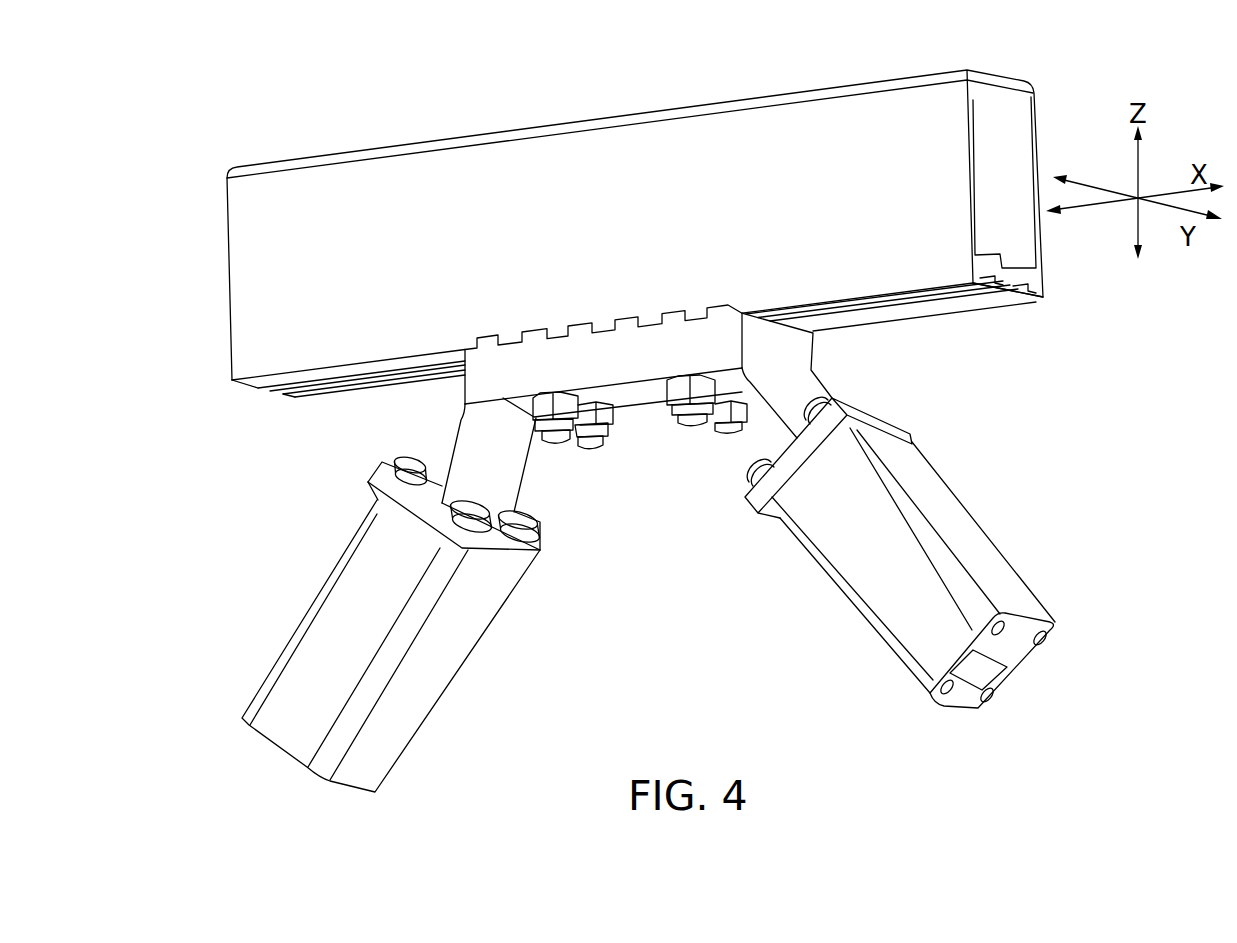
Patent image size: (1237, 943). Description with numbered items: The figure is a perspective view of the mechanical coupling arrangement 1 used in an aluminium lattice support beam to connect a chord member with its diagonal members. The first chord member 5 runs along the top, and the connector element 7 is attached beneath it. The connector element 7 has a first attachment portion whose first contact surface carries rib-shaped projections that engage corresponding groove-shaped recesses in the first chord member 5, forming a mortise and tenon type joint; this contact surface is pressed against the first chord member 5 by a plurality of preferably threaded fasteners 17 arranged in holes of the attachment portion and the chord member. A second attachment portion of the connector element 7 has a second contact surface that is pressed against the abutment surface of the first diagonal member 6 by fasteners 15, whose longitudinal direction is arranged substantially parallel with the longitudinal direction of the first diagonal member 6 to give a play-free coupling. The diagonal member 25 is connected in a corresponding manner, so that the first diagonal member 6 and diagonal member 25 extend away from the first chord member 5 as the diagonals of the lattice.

The mechanical coupling arrangement 1 is at (176, 111).
The first chord member 5 is at (415, 233).
The first diagonal member 6 is at (317, 663).
The connector element 7 is at (517, 477).
The fasteners 15 is at (397, 456).
The fasteners 17 is at (600, 453).
The diagonal member 25 is at (967, 540).